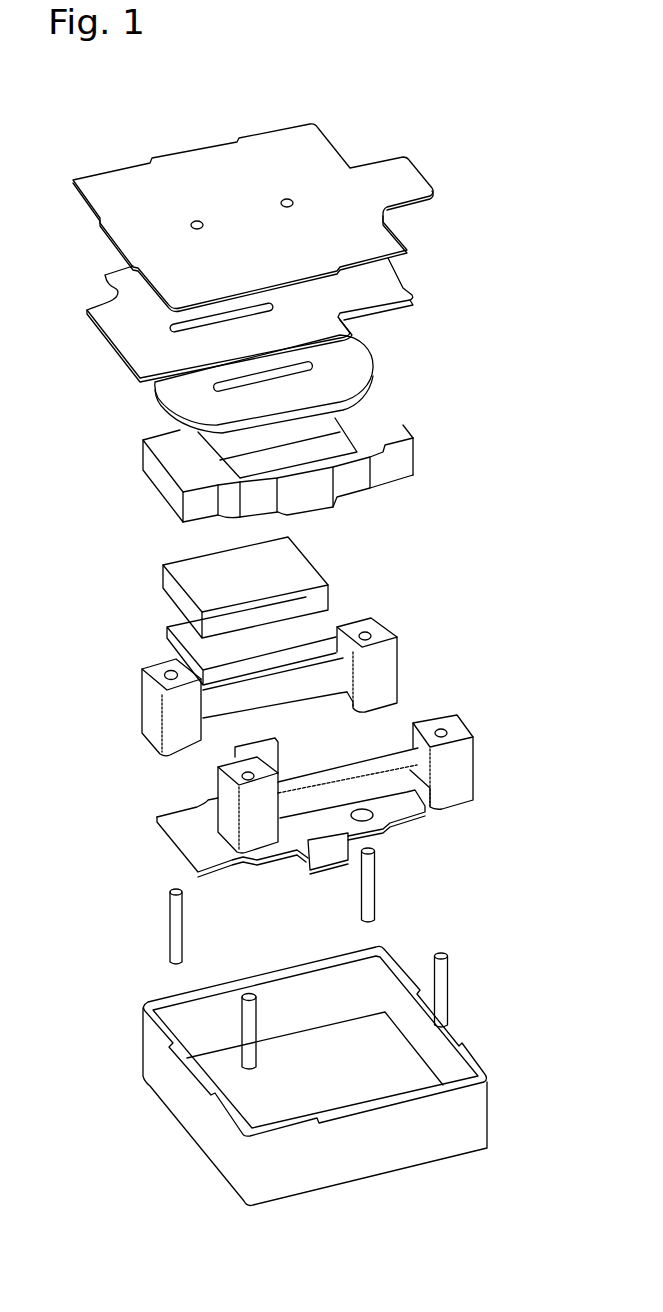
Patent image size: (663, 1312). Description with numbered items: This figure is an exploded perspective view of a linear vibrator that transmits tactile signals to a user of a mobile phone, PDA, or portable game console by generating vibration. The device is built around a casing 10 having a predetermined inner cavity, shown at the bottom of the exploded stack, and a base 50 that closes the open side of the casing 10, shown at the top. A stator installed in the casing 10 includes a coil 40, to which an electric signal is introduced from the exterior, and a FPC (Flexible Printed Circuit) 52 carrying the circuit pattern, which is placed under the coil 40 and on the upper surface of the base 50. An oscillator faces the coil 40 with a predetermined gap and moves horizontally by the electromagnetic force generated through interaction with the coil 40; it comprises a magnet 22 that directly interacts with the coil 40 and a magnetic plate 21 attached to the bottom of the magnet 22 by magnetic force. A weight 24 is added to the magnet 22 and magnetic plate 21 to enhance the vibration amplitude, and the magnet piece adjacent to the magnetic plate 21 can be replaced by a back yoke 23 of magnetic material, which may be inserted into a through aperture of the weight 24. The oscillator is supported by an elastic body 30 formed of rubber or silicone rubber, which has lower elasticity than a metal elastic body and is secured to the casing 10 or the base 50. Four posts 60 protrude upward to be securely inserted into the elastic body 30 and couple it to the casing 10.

The casing 10 is at (477, 1053).
The magnetic plate 21 is at (410, 822).
The magnet 22 is at (302, 565).
The back yoke 23 is at (307, 633).
The weight 24 is at (400, 453).
The elastic body 30 is at (147, 707).
The coil 40 is at (362, 368).
The base 50 is at (382, 220).
The FPC (Flexible Printed Circuit) 52 is at (395, 287).
The post 60 is at (448, 962).